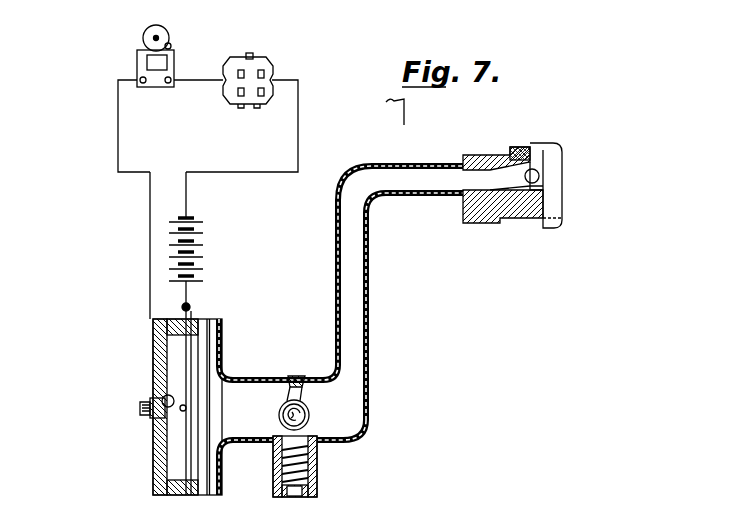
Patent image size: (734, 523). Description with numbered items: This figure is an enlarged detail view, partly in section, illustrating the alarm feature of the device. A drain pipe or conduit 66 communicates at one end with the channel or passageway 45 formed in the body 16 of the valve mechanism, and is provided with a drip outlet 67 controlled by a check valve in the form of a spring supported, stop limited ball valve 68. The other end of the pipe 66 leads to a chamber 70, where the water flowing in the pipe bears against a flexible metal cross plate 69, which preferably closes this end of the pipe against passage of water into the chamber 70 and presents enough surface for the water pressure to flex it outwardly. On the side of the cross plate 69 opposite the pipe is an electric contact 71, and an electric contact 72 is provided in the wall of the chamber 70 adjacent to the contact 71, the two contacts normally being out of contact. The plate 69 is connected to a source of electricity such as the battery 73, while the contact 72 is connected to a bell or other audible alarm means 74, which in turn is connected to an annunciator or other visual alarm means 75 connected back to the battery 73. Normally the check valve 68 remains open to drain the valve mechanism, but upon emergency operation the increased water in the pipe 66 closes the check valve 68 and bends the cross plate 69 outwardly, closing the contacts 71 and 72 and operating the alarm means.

The bell 74 is at (138, 62).
The annunciator 75 is at (262, 60).
The battery 73 is at (204, 258).
The chamber 70 is at (174, 438).
The flexible metal cross plate 69 is at (188, 367).
The electric contact 72 is at (160, 402).
The electric contact 71 is at (186, 407).
The drain pipe 66 is at (345, 166).
The ball valve 68 is at (310, 413).
The drip outlet 67 is at (277, 462).
The fitting body 16 is at (465, 207).
The passageway 45 is at (539, 178).